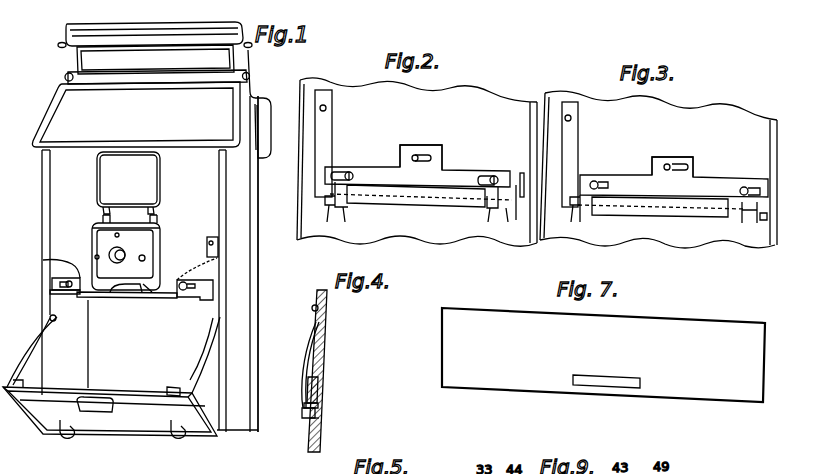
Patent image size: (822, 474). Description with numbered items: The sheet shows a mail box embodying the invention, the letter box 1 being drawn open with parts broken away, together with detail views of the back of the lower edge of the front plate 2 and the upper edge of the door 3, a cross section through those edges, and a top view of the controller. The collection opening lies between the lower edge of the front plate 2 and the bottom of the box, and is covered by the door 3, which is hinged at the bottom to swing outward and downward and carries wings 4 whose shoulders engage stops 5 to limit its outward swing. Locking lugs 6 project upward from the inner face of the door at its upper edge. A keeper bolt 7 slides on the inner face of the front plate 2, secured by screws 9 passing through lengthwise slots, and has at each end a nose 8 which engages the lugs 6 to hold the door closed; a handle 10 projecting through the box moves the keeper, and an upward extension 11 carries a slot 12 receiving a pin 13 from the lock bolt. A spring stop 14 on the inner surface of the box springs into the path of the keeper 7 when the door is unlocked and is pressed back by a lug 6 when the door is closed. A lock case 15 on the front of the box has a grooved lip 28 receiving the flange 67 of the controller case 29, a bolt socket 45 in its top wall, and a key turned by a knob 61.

In FIG. 1, the letter box 1 is at (251, 288).
In FIG. 1, the front plate 2 is at (207, 226).
In FIG. 2, the front plate 2 is at (470, 100).
In FIG. 3, the front plate 2 is at (702, 122).
In FIG. 4, the front plate 2 is at (323, 357).
In FIG. 1, the door 3 is at (147, 423).
In FIG. 2, the door 3 is at (476, 230).
In FIG. 3, the door 3 is at (715, 230).
In FIG. 4, the door 3 is at (318, 433).
In FIG. 1, the wings 4 is at (40, 357).
In FIG. 1, the stops 5 is at (50, 318).
In FIG. 1, the locking lugs 6 is at (172, 388).
In FIG. 2, the locking lugs 6 is at (330, 212).
In FIG. 3, the locking lugs 6 is at (573, 225).
In FIG. 4, the locking lugs 6 is at (302, 413).
In FIG. 1, the keeper bolt 7 is at (52, 278).
In FIG. 2, the keeper bolt 7 is at (355, 170).
In FIG. 3, the keeper bolt 7 is at (612, 177).
In FIG. 4, the keeper bolt 7 is at (320, 380).
In FIG. 1, the nose 8 is at (50, 292).
In FIG. 2, the nose 8 is at (517, 185).
In FIG. 3, the nose 8 is at (763, 222).
In FIG. 4, the nose 8 is at (318, 407).
In FIG. 1, the screws 9 is at (74, 280).
In FIG. 2, the screws 9 is at (348, 190).
In FIG. 3, the screws 9 is at (592, 200).
In FIG. 1, the handle 10 is at (128, 287).
In FIG. 2, the upward extension 11 is at (416, 147).
In FIG. 3, the upward extension 11 is at (664, 159).
In FIG. 2, the slot 12 is at (428, 152).
In FIG. 3, the slot 12 is at (690, 167).
In FIG. 2, the pin 13 is at (413, 167).
In FIG. 3, the pin 13 is at (668, 165).
In FIG. 1, the spring stop 14 is at (210, 290).
In FIG. 2, the spring stop 14 is at (315, 183).
In FIG. 3, the spring stop 14 is at (569, 104).
In FIG. 4, the spring stop 14 is at (322, 327).
In FIG. 1, the lock case 15 is at (160, 232).
In FIG. 7, the lock case 15 is at (721, 402).
In FIG. 1, the grooved lip 28 is at (140, 285).
In FIG. 1, the controller case 29 is at (95, 242).
In FIG. 7, the bolt socket 45 is at (612, 386).
In FIG. 1, the knob 61 is at (124, 251).
In FIG. 1, the flange 67 is at (150, 284).